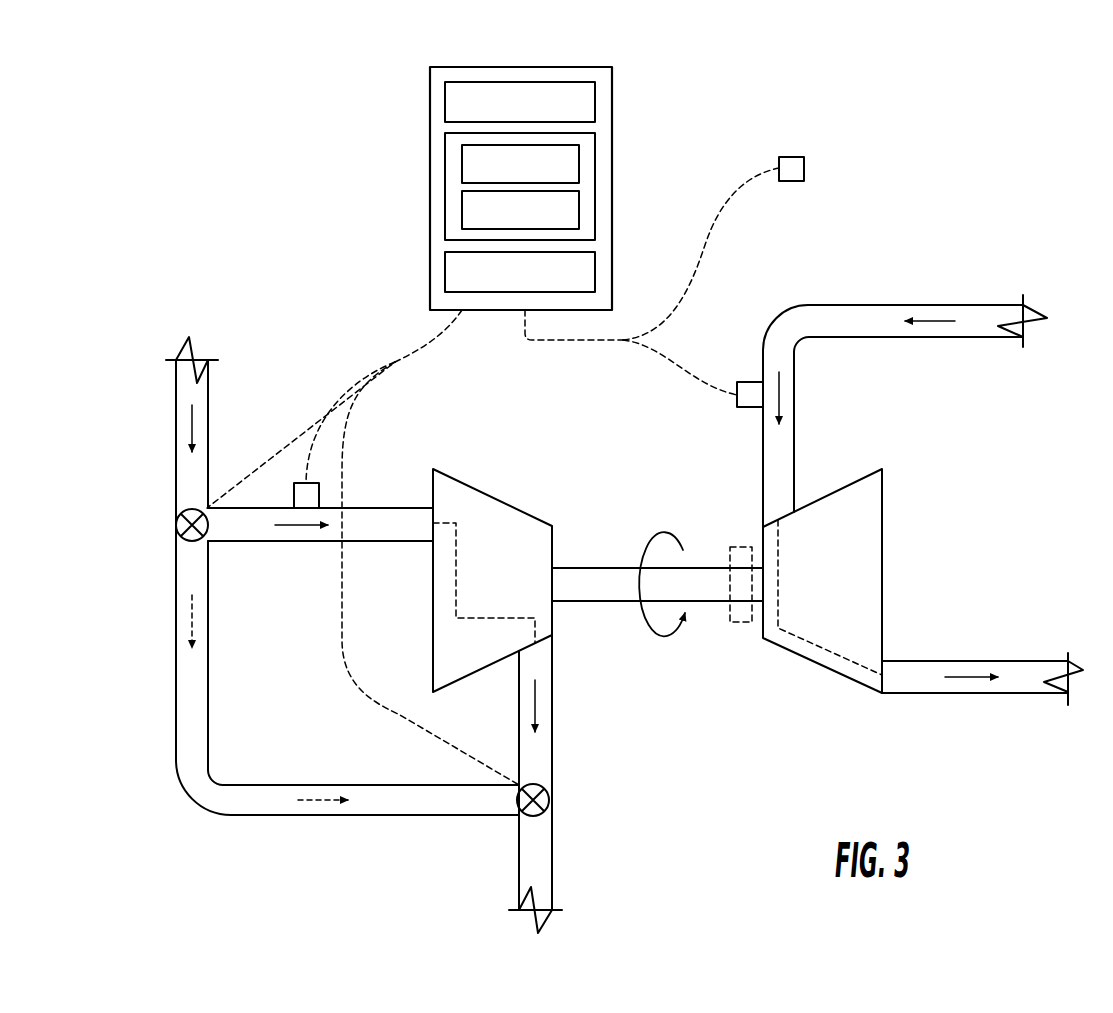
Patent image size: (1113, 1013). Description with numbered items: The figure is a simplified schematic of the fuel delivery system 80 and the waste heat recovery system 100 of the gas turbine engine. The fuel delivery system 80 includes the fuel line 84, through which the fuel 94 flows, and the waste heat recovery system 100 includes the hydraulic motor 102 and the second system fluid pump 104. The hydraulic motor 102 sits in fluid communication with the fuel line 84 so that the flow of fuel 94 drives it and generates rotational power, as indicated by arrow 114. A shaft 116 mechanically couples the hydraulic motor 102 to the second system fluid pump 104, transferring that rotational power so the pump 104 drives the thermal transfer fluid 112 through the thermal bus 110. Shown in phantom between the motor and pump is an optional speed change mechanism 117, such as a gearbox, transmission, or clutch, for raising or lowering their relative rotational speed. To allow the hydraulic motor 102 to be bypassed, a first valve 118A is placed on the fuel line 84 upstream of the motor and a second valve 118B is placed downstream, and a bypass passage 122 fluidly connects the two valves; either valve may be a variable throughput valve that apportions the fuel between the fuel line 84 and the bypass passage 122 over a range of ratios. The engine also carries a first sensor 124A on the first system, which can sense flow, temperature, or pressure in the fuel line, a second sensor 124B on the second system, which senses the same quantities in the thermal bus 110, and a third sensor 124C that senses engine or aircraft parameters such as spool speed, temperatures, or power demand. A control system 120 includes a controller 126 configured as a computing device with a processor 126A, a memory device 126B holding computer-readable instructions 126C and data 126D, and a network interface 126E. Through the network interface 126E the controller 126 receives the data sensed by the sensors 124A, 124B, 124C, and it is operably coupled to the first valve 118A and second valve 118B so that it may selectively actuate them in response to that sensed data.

The fuel delivery system 80 is at (100, 381).
The fuel line 84 is at (208, 402).
The fuel 94 is at (188, 445).
The waste heat recovery system 100 is at (910, 203).
The hydraulic motor 102 is at (510, 595).
The second system fluid pump 104 is at (840, 595).
The thermal bus 110 is at (977, 304).
The thermal transfer fluid 112 is at (925, 320).
The arrow 114 is at (655, 532).
The shaft 116 is at (700, 592).
The speed change mechanism 117 is at (736, 547).
The first valve 118A is at (177, 525).
The second valve 118B is at (552, 800).
The control system 120 is at (380, 101).
The bypass passage 122 is at (175, 732).
The first sensor 124A is at (292, 498).
The second sensor 124B is at (752, 408).
The third sensor 124C is at (790, 160).
The controller 126 is at (612, 92).
The processor 126A is at (515, 100).
The memory device 126B is at (444, 158).
The computer-readable instructions 126C is at (570, 167).
The data 126D is at (570, 206).
The network interface 126E is at (598, 277).